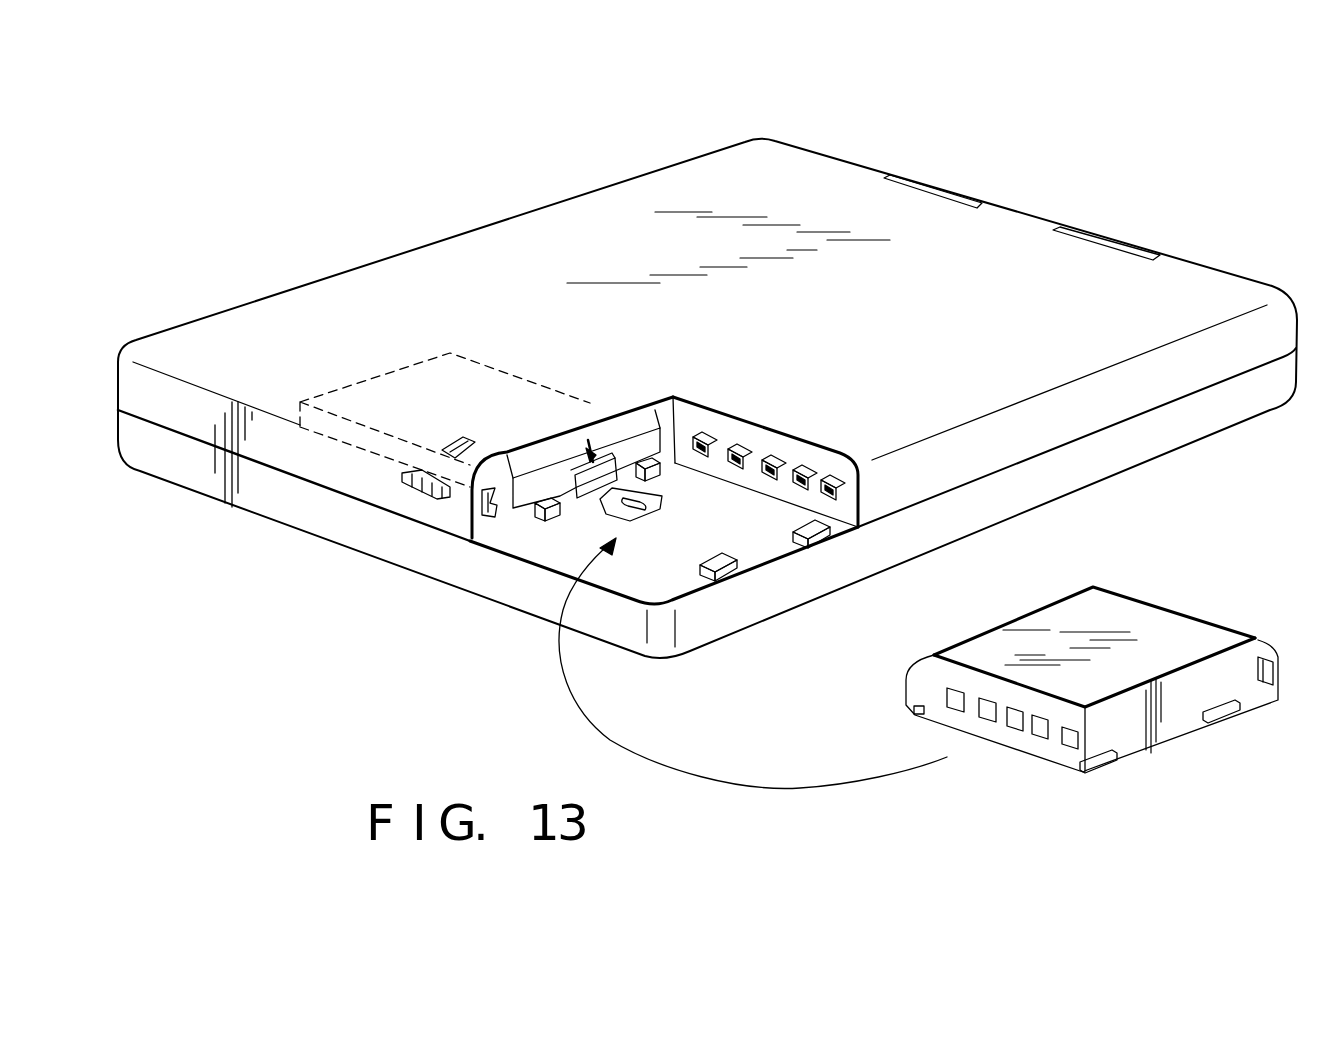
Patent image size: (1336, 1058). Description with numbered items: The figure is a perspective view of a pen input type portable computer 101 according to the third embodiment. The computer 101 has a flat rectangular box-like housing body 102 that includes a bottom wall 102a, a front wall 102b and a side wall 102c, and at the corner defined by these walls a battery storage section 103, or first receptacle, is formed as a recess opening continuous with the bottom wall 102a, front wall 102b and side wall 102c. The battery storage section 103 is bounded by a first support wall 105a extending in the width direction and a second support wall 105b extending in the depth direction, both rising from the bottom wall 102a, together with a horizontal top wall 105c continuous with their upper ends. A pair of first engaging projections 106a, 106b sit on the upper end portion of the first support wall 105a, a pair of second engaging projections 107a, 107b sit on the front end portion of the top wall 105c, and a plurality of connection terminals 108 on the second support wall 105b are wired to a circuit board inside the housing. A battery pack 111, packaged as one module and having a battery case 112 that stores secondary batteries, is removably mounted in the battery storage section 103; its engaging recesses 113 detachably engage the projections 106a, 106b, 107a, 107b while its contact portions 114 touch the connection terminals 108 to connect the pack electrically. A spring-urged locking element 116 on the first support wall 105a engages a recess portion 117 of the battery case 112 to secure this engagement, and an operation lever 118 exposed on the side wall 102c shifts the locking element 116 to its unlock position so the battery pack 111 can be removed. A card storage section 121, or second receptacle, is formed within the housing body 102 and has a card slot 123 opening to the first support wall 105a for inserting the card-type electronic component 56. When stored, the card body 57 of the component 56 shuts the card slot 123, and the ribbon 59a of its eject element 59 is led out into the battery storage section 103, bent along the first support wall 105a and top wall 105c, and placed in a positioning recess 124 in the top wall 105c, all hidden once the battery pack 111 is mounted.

The portable computer 101 is at (948, 178).
The housing body 102 is at (494, 236).
The bottom wall 102a is at (1090, 268).
The front wall 102b is at (1133, 447).
The side wall 102c is at (285, 510).
The battery storage section 103 is at (665, 590).
The first support wall 105a is at (667, 418).
The second support wall 105b is at (700, 420).
The top wall 105c is at (563, 560).
The first engaging projection 106a is at (540, 515).
The first engaging projection 106b is at (650, 460).
The second engaging projection 107a is at (720, 578).
The second engaging projection 107b is at (822, 540).
The connection terminals 108 is at (833, 480).
The battery pack 111 is at (1170, 604).
The battery case 112 is at (1045, 620).
The engaging recesses 113 is at (917, 714).
The contact portions 114 is at (1068, 746).
The locking element 116 is at (470, 515).
The recess portion 117 is at (1275, 667).
The operation lever 118 is at (430, 477).
The card storage section 121 is at (422, 352).
The card slot 123 is at (560, 467).
The recess 124 is at (625, 512).
The card-type electronic component 56 is at (590, 452).
The card body 57 is at (523, 477).
The eject element 59 is at (593, 487).
The ribbon 59a is at (653, 493).